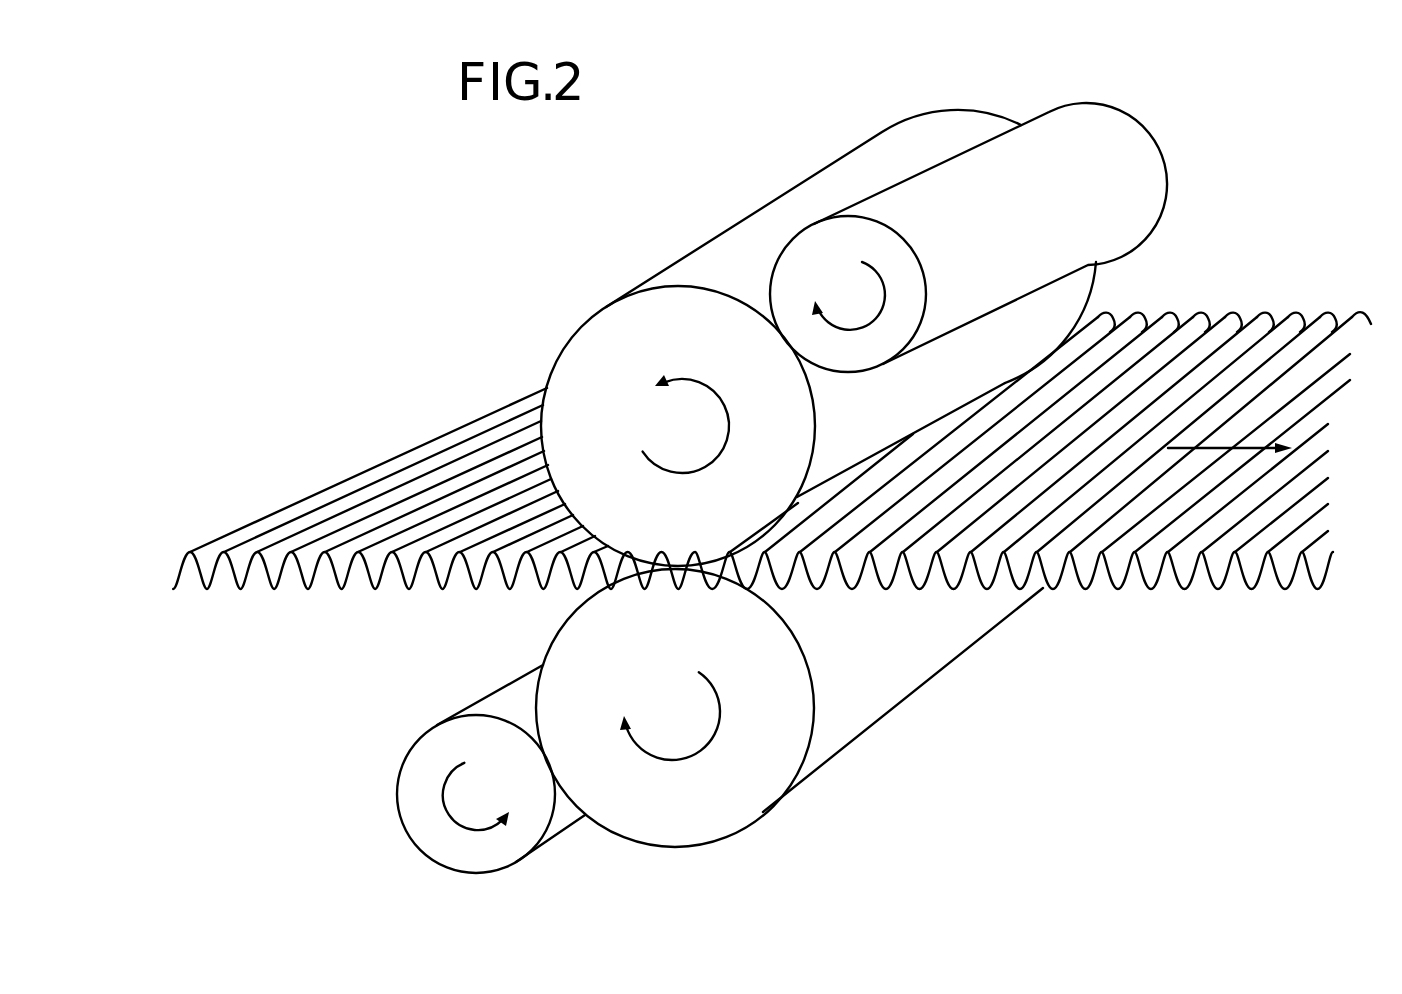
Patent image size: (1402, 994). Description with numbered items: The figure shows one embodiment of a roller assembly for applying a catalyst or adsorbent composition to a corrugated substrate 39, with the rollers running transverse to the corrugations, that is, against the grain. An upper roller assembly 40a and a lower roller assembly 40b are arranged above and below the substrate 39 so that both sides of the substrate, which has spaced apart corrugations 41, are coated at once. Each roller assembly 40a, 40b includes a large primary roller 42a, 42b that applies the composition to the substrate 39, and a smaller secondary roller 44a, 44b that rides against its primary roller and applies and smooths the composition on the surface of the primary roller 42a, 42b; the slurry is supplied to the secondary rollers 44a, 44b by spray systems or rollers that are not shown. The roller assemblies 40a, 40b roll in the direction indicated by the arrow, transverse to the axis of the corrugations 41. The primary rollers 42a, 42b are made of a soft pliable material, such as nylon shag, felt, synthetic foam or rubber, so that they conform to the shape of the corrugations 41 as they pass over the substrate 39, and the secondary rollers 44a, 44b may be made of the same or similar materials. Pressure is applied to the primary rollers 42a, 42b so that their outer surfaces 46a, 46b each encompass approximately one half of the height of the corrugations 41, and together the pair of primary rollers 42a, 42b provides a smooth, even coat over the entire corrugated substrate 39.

The substrate 39 is at (309, 484).
The upper roller assembly 40a is at (854, 314).
The lower roller assembly 40b is at (720, 721).
The corrugations 41 is at (1309, 561).
The primary roller 42a is at (678, 342).
The primary roller 42b is at (692, 633).
The secondary roller 44a is at (862, 251).
The secondary roller 44b is at (492, 751).
The outer surface 46a is at (797, 497).
The outer surface 46b is at (763, 813).